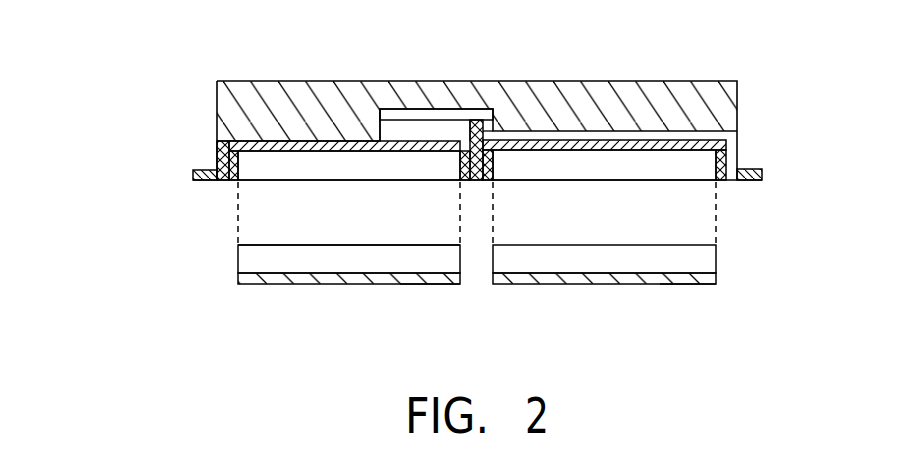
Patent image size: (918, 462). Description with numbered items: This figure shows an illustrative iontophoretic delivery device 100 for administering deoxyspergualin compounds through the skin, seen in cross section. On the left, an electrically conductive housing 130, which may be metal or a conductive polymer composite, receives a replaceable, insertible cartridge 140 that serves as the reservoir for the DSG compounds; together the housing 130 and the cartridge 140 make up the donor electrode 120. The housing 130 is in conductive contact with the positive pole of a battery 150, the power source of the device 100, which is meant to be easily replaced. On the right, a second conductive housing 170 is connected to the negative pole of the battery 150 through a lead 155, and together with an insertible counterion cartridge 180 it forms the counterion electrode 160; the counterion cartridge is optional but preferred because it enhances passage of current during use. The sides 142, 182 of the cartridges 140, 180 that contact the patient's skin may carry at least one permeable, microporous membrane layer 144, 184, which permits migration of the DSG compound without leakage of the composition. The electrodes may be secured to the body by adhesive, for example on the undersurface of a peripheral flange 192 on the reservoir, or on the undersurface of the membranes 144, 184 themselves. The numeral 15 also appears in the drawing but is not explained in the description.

The iontophoretic delivery device 100 is at (770, 102).
The donor electrode 120 is at (88, 193).
The housing 130 is at (229, 153).
The cartridge 140 is at (240, 246).
The chip 15 is at (253, 261).
The side of cartridge 142 is at (337, 285).
The permeable membrane layer 144 is at (427, 283).
The peripheral flange 192 is at (208, 181).
The battery 150 is at (418, 135).
The lead 155 is at (483, 122).
The counterion electrode 160 is at (823, 190).
The housing 170 is at (720, 148).
The counterion cartridge 180 is at (716, 259).
The permeable membrane layer 184 is at (607, 283).
The side of cartridge 182 is at (703, 283).